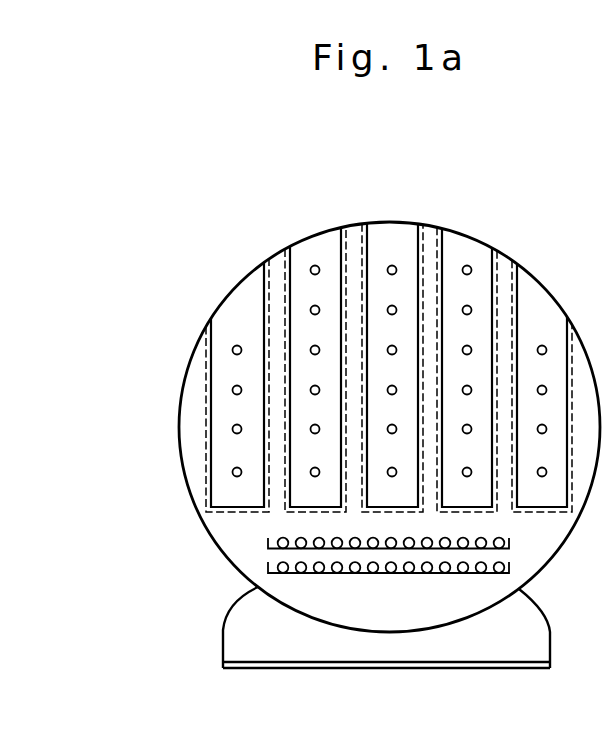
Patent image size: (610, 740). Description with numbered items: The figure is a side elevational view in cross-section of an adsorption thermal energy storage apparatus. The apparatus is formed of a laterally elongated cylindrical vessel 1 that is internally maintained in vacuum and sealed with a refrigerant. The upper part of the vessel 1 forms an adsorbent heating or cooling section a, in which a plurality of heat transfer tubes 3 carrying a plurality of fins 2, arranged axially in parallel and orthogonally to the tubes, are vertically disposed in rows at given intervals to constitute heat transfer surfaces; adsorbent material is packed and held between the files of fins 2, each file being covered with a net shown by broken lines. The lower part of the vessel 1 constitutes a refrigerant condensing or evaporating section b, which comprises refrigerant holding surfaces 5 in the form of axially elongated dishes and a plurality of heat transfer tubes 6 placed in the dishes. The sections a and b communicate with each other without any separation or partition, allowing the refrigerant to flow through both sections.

The cylindrical vessel 1 is at (352, 222).
The fins 2 is at (458, 243).
The heat transfer tubes 3 is at (472, 265).
The refrigerant holding surfaces 5 is at (267, 545).
The heat transfer tubes 6 is at (265, 565).
The adsorbent heating or cooling section a is at (192, 382).
The refrigerant condensing or evaporating section b is at (218, 525).